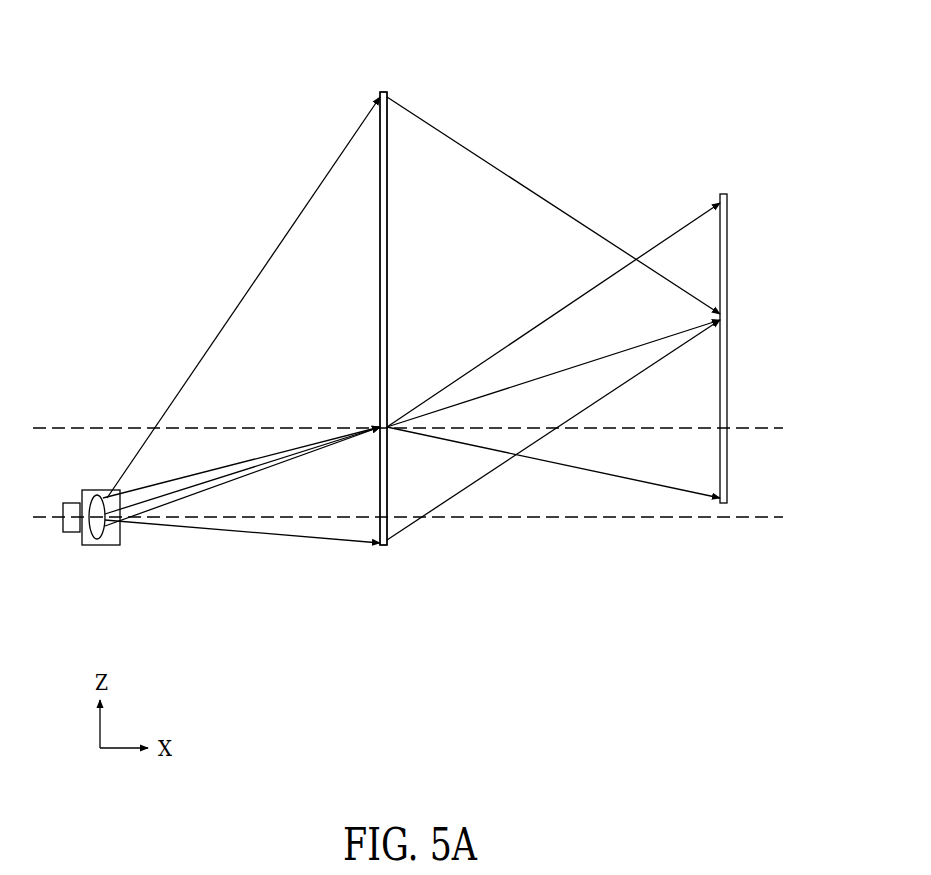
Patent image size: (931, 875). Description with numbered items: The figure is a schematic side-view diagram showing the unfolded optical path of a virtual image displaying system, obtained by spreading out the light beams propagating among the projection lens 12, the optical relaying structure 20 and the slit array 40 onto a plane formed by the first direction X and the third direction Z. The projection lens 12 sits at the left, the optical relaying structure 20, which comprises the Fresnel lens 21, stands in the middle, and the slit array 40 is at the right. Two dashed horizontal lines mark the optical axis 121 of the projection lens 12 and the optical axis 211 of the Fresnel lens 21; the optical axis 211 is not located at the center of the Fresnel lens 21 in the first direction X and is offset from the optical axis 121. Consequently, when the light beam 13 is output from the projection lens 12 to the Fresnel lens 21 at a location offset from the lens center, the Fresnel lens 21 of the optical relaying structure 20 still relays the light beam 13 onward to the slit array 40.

The projection lens 12 is at (97, 548).
The light beam 13 is at (285, 292).
The optical relaying structure 20 is at (383, 90).
The Fresnel lens 21 is at (383, 318).
The slit array 40 is at (731, 208).
The optical axis of the projection lens 121 is at (622, 521).
The optical axis of the Fresnel lens 211 is at (63, 425).